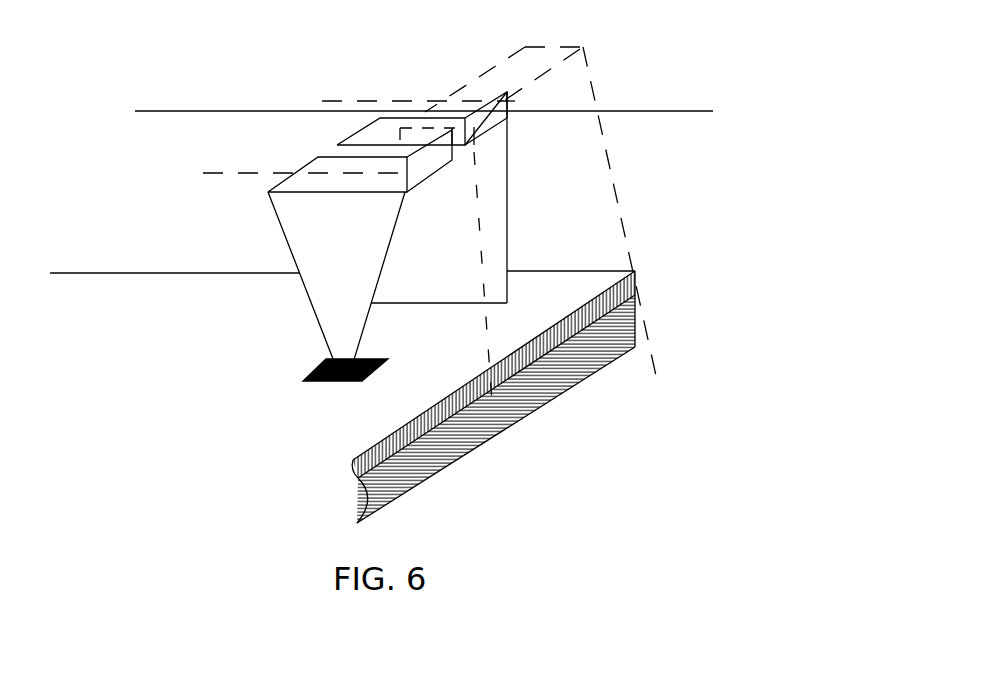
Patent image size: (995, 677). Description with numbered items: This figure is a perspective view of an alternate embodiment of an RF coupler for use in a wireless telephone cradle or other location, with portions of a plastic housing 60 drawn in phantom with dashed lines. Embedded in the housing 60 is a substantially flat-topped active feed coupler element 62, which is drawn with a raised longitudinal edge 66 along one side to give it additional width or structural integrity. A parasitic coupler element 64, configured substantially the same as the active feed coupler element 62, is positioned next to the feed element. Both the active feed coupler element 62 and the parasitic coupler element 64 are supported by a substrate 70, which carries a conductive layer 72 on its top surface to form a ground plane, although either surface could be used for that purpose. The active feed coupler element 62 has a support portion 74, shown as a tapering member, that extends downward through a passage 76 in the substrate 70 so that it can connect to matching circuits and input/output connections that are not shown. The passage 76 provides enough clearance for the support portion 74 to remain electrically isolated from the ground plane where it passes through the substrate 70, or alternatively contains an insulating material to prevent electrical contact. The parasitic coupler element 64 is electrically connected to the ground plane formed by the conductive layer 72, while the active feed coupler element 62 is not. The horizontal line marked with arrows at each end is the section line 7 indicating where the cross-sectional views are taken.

The section line 7- 7 is at (135, 111).
The housing 60 is at (598, 75).
The active feed coupler element 62 is at (292, 207).
The parasitic coupler element 64 is at (373, 124).
The raised longitudinal edge 66 is at (418, 168).
The substrate 70 is at (430, 463).
The conductive layer 72 is at (630, 292).
The support portion 74 is at (357, 248).
The passage 76 is at (313, 372).